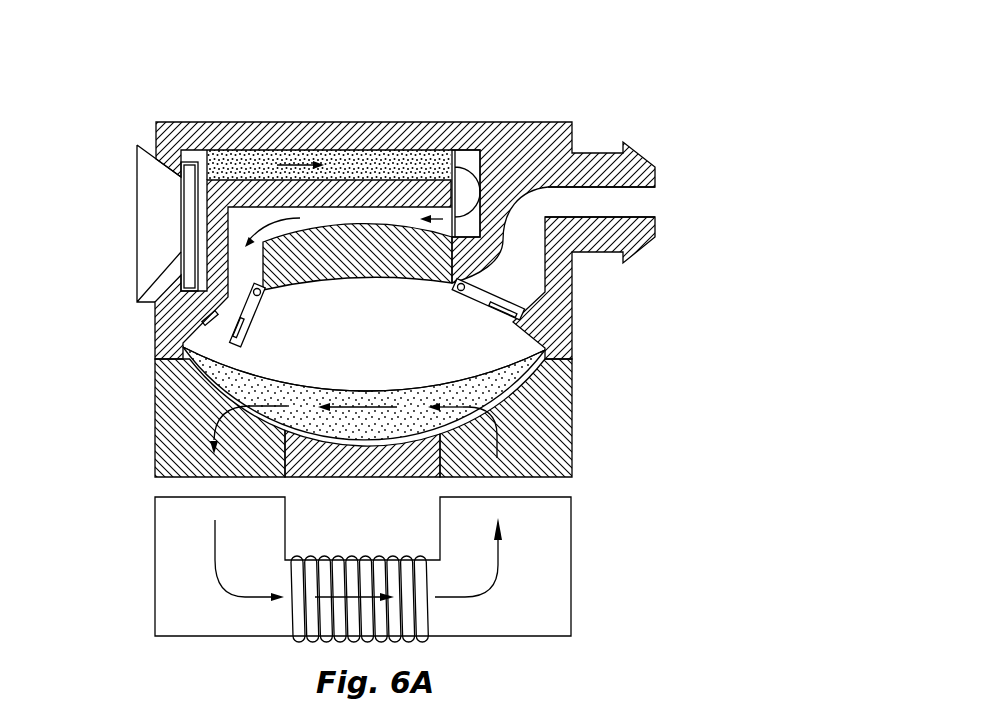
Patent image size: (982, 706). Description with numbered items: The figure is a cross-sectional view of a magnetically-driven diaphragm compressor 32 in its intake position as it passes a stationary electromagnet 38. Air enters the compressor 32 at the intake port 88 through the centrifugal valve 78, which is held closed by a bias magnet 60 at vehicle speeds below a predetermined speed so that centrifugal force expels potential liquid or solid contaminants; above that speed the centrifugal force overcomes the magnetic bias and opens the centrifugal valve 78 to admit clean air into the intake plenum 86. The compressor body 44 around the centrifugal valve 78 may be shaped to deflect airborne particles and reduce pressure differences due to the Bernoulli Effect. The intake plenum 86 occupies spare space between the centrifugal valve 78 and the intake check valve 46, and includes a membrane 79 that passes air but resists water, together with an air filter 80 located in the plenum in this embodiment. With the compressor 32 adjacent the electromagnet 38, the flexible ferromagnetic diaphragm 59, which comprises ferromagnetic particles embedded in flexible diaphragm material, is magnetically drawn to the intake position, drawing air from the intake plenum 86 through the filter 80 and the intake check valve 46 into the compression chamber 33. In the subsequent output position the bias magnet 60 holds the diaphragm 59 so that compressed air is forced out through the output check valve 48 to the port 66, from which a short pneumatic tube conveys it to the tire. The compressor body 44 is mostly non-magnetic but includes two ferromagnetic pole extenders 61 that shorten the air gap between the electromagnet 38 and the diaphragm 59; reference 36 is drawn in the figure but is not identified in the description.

The compressor 32 is at (543, 80).
The compressor body 44 is at (552, 122).
The intake port 88 is at (153, 153).
The intake plenum 86 is at (290, 146).
The bias magnet 60 is at (358, 238).
The air filter 80 is at (412, 152).
The membrane 79 is at (473, 152).
The port 66 is at (645, 208).
The centrifugal valve 78 is at (150, 245).
The output check valve 48 is at (510, 303).
The intake check valve 46 is at (237, 316).
The compression chamber 33 is at (258, 357).
The ferromagnetic diaphragm 59 is at (497, 386).
The ferromagnetic pole extenders 61 is at (173, 424).
The supply line 36 is at (213, 562).
The electromagnet 38 is at (558, 571).